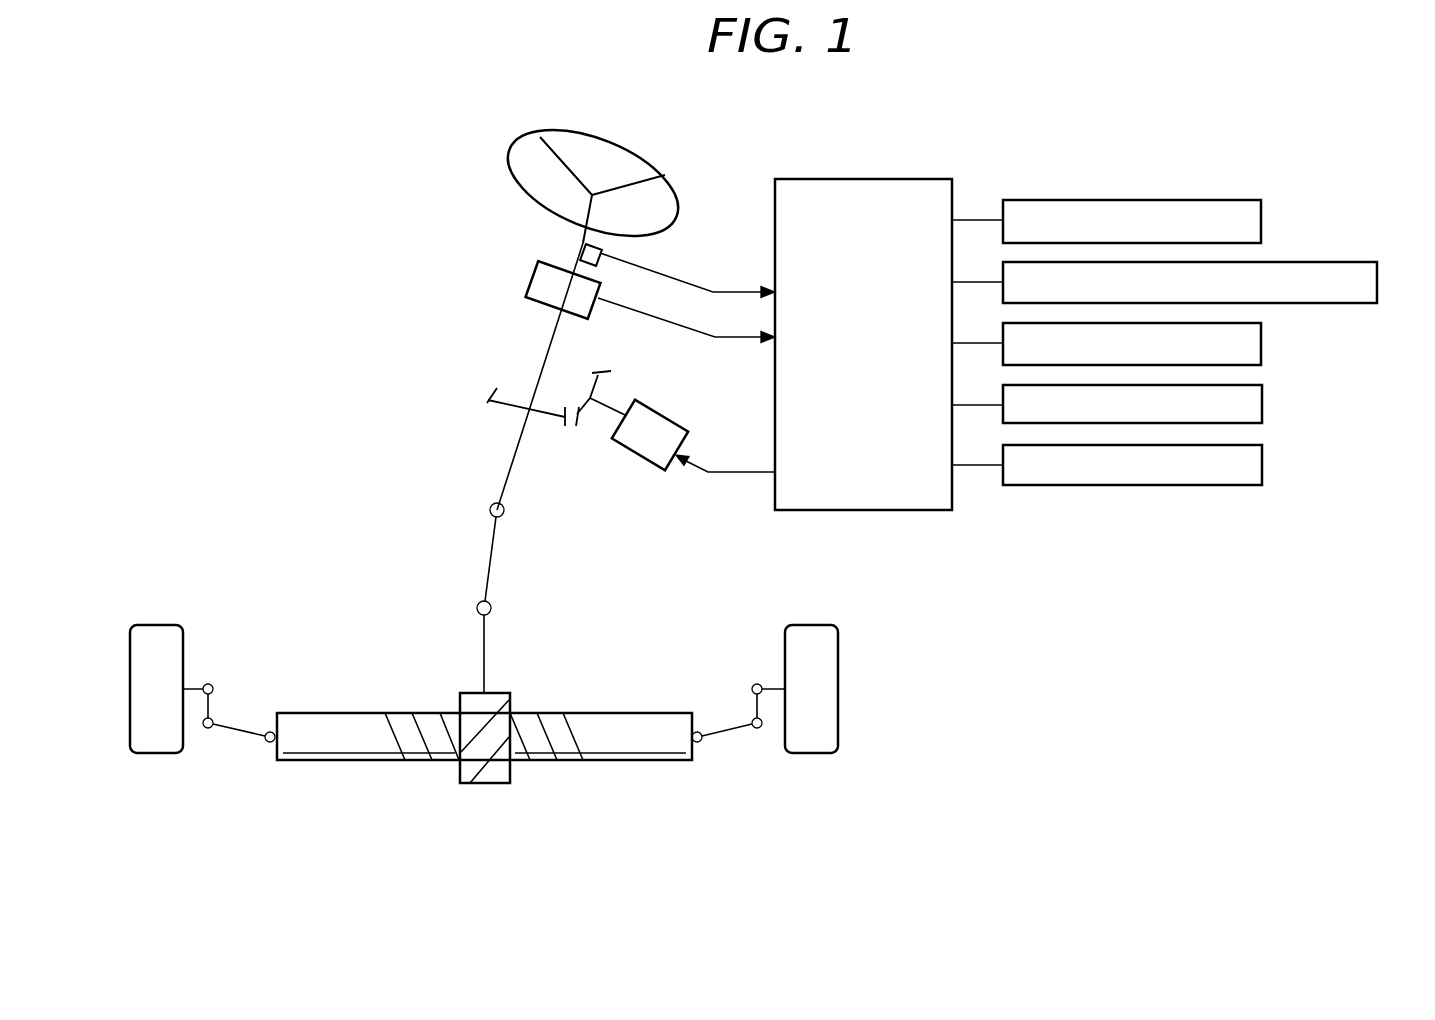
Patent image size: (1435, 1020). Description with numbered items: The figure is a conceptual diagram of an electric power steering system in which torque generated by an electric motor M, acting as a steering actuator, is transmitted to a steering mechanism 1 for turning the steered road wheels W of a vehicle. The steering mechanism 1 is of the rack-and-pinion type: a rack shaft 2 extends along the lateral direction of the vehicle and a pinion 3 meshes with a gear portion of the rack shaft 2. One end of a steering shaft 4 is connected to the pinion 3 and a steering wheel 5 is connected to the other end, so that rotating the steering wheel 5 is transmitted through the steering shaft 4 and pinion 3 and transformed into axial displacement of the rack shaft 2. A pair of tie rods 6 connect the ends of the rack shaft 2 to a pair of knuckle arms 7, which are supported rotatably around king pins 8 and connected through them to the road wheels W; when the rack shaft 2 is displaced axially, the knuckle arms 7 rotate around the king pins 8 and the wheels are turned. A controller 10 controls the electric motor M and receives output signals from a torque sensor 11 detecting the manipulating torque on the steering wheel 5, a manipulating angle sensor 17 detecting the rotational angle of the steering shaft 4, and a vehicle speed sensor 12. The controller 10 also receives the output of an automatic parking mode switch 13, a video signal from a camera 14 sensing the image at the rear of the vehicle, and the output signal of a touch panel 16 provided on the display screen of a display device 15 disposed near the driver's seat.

The steering mechanism 1 is at (591, 795).
The rack shaft 2 is at (356, 762).
The pinion 3 is at (485, 785).
The steering shaft 4 is at (542, 352).
The steering wheel 5 is at (620, 142).
The tie rods 6 is at (232, 745).
The knuckle arms 7 is at (213, 707).
The king pins 8 is at (210, 682).
The controller 10 is at (898, 178).
The torque sensor 11 is at (533, 278).
The vehicle speed sensor 12 is at (1262, 216).
The automatic parking mode switch 13 is at (1378, 278).
The camera 14 is at (1262, 345).
The display device 15 is at (1262, 405).
The touch panel 16 is at (1262, 465).
The manipulating angle sensor 17 is at (580, 248).
The electric motor M is at (693, 436).
The steered road wheels W is at (175, 625).